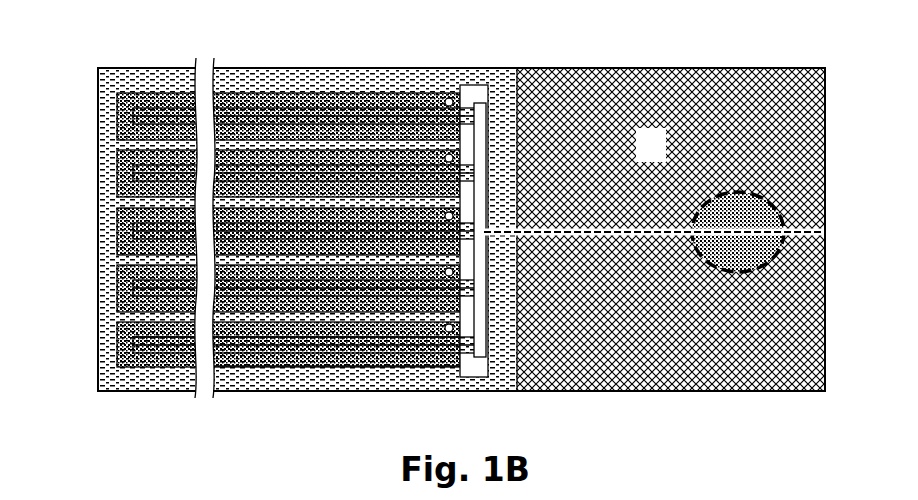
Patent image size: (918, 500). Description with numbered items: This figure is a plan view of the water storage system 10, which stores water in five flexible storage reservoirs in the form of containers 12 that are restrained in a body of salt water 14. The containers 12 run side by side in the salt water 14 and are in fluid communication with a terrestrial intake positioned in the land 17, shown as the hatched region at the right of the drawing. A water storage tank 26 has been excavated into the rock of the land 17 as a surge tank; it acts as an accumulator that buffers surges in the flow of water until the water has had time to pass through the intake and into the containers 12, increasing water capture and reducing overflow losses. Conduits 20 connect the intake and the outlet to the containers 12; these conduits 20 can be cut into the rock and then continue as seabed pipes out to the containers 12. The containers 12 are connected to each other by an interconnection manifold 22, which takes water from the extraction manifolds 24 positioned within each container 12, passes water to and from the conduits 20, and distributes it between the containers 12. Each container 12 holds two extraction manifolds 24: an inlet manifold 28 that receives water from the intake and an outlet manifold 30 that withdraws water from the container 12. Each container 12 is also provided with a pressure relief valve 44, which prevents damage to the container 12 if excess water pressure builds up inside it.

The water storage system 10 is at (231, 45).
The containers 12 is at (122, 108).
The body of salt water 14 is at (278, 82).
The land 17 is at (641, 158).
The conduits 20 is at (580, 235).
The interconnection manifold 22 is at (369, 264).
The extraction manifolds 24 is at (312, 348).
The water storage tank 26 is at (752, 274).
The inlet manifold 28 is at (177, 350).
The outlet manifold 30 is at (163, 338).
The pressure relief valve 44 is at (451, 155).